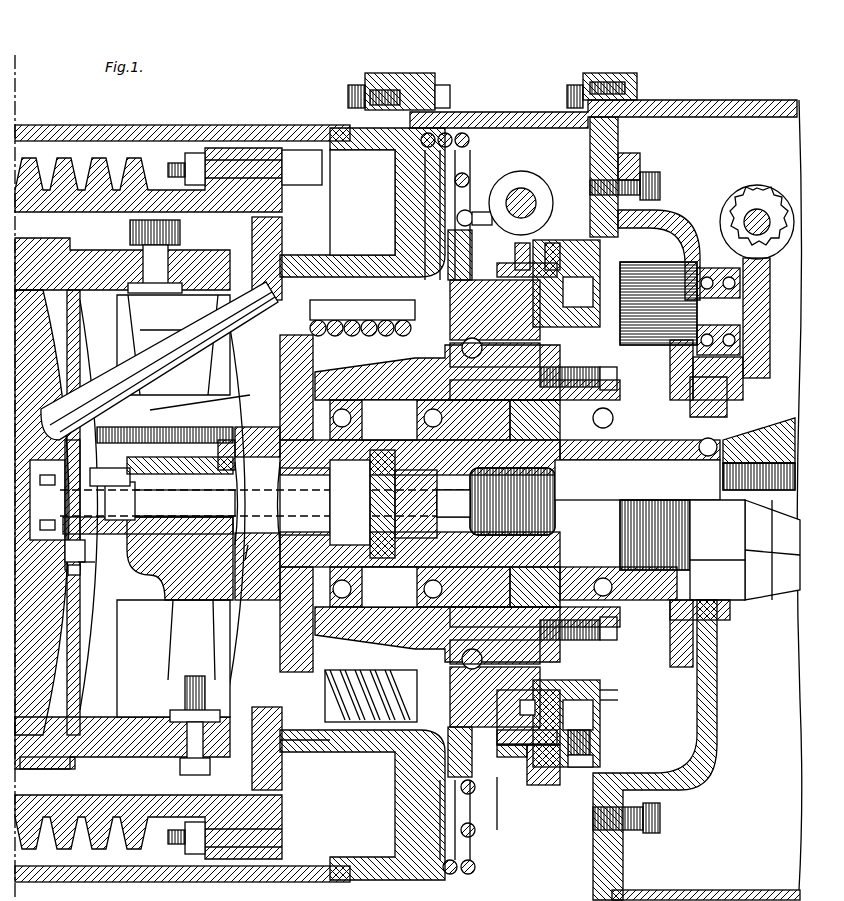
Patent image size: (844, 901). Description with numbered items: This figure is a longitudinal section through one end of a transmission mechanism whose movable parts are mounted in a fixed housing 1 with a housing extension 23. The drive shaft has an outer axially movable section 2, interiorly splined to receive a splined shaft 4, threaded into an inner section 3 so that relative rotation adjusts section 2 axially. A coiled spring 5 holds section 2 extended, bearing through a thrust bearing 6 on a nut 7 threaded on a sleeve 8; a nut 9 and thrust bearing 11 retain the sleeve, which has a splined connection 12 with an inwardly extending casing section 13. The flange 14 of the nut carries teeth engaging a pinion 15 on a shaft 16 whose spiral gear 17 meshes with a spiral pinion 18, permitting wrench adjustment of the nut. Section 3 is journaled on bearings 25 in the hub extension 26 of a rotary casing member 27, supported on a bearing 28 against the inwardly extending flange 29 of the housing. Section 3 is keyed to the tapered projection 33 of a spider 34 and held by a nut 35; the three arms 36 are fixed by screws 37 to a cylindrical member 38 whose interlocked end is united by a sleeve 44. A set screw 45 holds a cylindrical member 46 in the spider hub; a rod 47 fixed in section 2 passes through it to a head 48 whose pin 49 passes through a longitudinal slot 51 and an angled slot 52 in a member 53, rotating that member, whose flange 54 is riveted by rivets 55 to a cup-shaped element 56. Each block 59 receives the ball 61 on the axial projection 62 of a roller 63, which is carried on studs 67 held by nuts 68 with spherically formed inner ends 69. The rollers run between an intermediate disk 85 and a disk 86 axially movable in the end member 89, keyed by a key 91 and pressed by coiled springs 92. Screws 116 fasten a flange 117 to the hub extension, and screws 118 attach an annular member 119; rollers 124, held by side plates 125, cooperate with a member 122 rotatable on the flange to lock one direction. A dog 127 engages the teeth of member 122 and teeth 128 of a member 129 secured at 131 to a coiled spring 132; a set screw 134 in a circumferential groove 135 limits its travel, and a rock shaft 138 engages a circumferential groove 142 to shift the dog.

The housing 1 is at (247, 125).
The outer axially movable section 2 is at (604, 497).
The inner section 3 is at (248, 560).
The splined shaft 4 is at (550, 480).
The coiled spring 5 is at (495, 408).
The thrust bearing 6 is at (622, 410).
The nut 7 is at (672, 392).
The sleeve 8 is at (745, 435).
The nut 9 is at (722, 466).
The thrust bearing 11 is at (688, 465).
The splined connection 12 is at (730, 410).
The casing section 13 is at (668, 222).
The flange 14 is at (675, 352).
The pinion 15 is at (652, 296).
The shaft 16 is at (726, 320).
The spiral gear 17 is at (768, 360).
The spiral pinion 18 is at (760, 195).
The housing extension 23 is at (700, 110).
The bearings 25 is at (368, 422).
The hub extension 26 is at (385, 385).
The rotary casing member 27 is at (140, 168).
The bearing 28 is at (480, 346).
The inwardly extending flange 29 is at (398, 219).
The tapered projection 33 is at (265, 501).
The spider 34 is at (175, 586).
The nut 35 is at (350, 470).
The arms 36 is at (175, 647).
The screws 37 is at (208, 768).
The cylindrical member 38 is at (128, 752).
The sleeve 44 is at (45, 766).
The set screw 45 is at (190, 492).
The cylindrical member 46 is at (190, 522).
The rod 47 is at (240, 497).
The head 48 is at (108, 510).
The pin 49 is at (115, 488).
The longitudinal slot 51 is at (68, 482).
The slot 52 is at (95, 472).
The member 53 is at (85, 552).
The flange 54 is at (80, 574).
The rivets 55 is at (85, 566).
The cup-shaped element 56 is at (80, 680).
The block 59 is at (228, 440).
The ball 61 is at (190, 408).
The axial projection 62 is at (190, 392).
The roller 63 is at (232, 340).
The studs 67 is at (125, 302).
The nuts 68 is at (182, 232).
The spherically formed inner ends 69 is at (137, 337).
The intermediate disk 85 is at (32, 622).
The disk 86 is at (262, 645).
The end member 89 is at (318, 256).
The key 91 is at (278, 732).
The coiled springs 92 is at (352, 338).
The screws 116 is at (578, 375).
The flange 117 is at (616, 245).
The screws 118 is at (600, 765).
The annular member 119 is at (600, 745).
The member 122 is at (618, 690).
The rollers 124 is at (605, 284).
The side plates 125 is at (618, 700).
The dog 127 is at (522, 760).
The teeth 128 is at (508, 745).
The member 129 is at (490, 800).
The securing point 131 is at (470, 208).
The coiled spring 132 is at (470, 152).
The set screw 134 is at (532, 302).
The circumferential groove 135 is at (518, 708).
The rock shaft 138 is at (518, 186).
The circumferential groove 142 is at (563, 770).